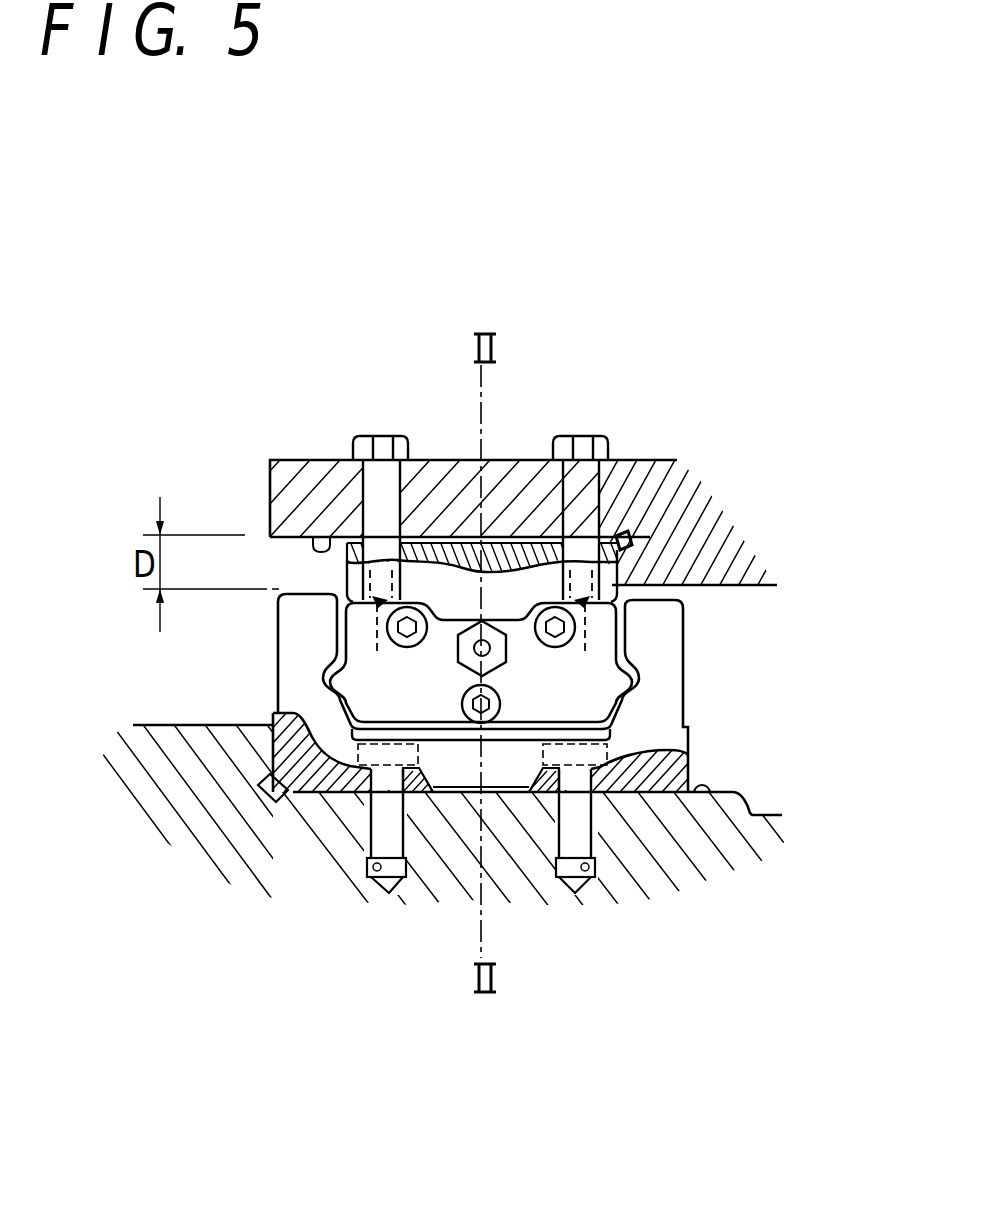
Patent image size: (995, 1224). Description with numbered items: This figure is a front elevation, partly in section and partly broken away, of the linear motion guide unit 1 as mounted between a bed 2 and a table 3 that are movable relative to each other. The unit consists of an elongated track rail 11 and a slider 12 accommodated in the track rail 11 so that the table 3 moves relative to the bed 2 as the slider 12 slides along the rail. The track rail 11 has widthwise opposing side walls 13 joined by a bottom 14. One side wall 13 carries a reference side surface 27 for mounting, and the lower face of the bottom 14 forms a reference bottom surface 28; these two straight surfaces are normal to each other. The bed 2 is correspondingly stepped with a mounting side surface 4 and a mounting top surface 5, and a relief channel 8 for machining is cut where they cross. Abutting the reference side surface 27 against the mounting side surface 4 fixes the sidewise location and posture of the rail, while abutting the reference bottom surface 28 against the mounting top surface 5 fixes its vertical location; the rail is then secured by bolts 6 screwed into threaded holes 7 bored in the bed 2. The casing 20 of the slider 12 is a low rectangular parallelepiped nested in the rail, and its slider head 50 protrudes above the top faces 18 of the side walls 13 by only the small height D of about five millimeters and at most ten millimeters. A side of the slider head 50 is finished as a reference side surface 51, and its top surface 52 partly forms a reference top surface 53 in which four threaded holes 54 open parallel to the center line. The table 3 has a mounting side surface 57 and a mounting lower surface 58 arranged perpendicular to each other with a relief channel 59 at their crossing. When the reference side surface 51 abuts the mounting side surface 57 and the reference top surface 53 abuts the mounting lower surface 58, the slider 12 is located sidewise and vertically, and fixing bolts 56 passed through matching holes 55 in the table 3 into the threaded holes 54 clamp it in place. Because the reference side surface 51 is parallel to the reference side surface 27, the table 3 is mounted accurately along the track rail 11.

The linear motion guide unit 1 is at (262, 687).
The bed 2 is at (733, 840).
The table 3 is at (670, 493).
The mounting side surface 4 is at (262, 762).
The mounting top surface 5 is at (320, 794).
The bolts 6 is at (383, 833).
The threaded holes 7 is at (389, 895).
The relief channel 8 is at (259, 781).
The track rail 11 is at (283, 733).
The slider 12 is at (330, 572).
The side walls 13 is at (303, 640).
The bottom 14 is at (643, 800).
The top faces 18 is at (683, 587).
The casing 20 is at (347, 552).
The reference side surface 27 is at (259, 779).
The reference bottom surface 28 is at (345, 795).
The slider head 50 is at (510, 543).
The reference side surface 51 is at (620, 556).
The top surface 52 is at (457, 543).
The reference top surface 53 is at (363, 533).
The threaded holes 54 is at (482, 636).
The matching holes 55 is at (385, 445).
The fixing bolts 56 is at (380, 487).
The mounting side surface 57 is at (617, 578).
The mounting lower surface 58 is at (310, 535).
The relief channel 59 is at (622, 536).